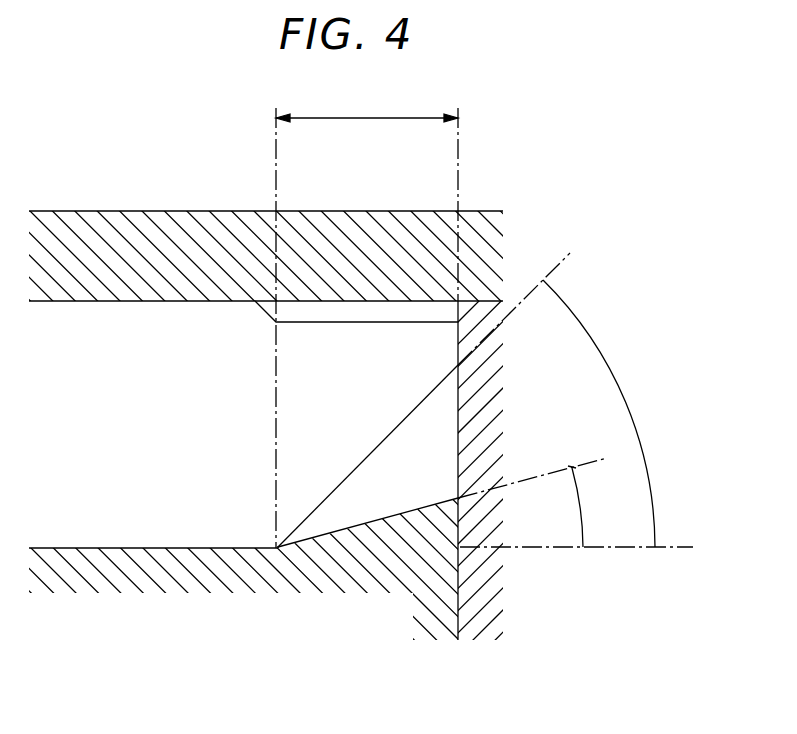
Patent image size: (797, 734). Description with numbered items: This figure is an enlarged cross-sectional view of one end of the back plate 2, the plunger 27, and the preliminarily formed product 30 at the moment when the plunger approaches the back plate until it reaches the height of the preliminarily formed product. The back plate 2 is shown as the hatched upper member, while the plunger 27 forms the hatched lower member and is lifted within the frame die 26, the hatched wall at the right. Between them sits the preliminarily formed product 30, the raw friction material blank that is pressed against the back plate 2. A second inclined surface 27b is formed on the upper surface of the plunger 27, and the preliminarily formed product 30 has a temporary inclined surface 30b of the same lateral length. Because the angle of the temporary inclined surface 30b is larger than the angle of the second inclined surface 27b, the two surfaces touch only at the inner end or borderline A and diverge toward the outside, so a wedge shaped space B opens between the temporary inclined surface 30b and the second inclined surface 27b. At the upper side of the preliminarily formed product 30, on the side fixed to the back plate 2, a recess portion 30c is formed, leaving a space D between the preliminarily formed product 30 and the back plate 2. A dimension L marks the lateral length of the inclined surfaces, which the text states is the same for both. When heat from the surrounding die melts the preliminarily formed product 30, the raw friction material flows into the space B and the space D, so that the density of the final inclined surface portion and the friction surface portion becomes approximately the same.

The back plate 2 is at (167, 253).
The preliminarily formed product 30 is at (118, 423).
The recess portion 30c is at (308, 315).
The temporary inclined surface 30b is at (393, 427).
The second inclined surface 27b is at (357, 523).
The plunger 27 is at (217, 631).
The frame die 26 is at (458, 597).
The end or borderline A is at (278, 549).
The wedge shaped space B is at (383, 460).
The space D is at (352, 310).
The length L is at (367, 107).